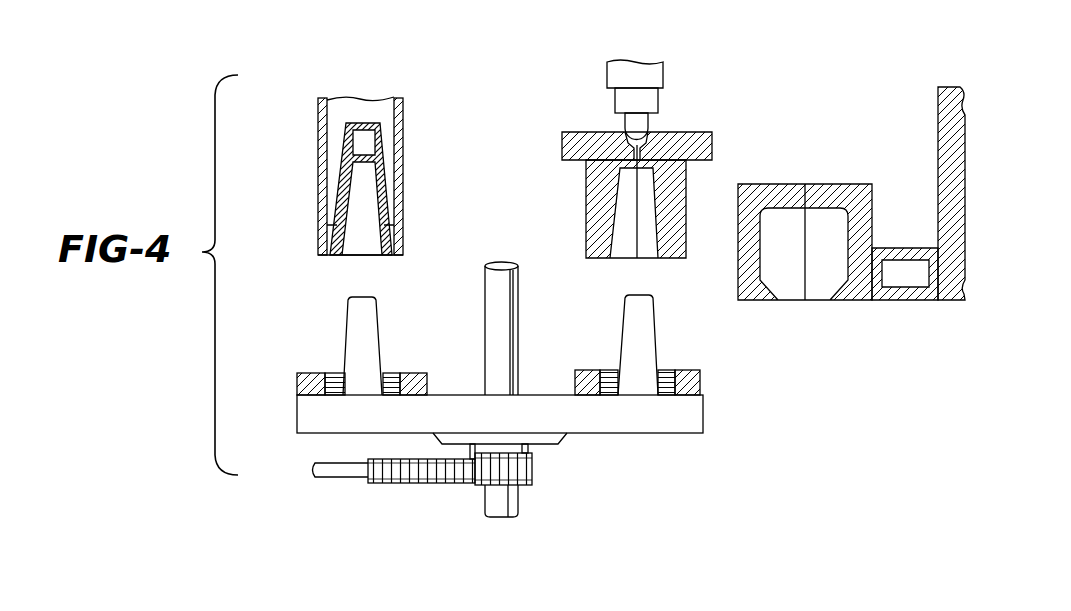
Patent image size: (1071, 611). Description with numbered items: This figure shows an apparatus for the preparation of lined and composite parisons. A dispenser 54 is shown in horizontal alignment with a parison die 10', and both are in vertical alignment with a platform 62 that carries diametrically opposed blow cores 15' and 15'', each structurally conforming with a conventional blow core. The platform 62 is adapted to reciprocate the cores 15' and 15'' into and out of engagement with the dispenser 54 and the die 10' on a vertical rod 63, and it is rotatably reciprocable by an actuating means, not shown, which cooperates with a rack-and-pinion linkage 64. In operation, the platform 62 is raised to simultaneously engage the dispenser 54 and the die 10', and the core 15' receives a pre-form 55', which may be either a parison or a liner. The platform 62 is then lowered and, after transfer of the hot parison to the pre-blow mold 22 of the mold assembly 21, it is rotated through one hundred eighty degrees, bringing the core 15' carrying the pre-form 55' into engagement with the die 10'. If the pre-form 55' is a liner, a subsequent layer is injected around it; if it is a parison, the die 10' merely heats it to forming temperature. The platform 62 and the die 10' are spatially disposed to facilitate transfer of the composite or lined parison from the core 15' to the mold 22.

The dispenser 54 is at (403, 160).
The pre-form 55' is at (328, 189).
The parison die 10' is at (668, 159).
The pre-blow mold 22 is at (838, 184).
The mold assembly 21 is at (920, 85).
The platform 62 is at (704, 410).
The blow core 15' is at (389, 346).
The blow core 15'' is at (666, 345).
The vertical rod 63 is at (503, 316).
The rack-and-pinion linkage 64 is at (469, 530).